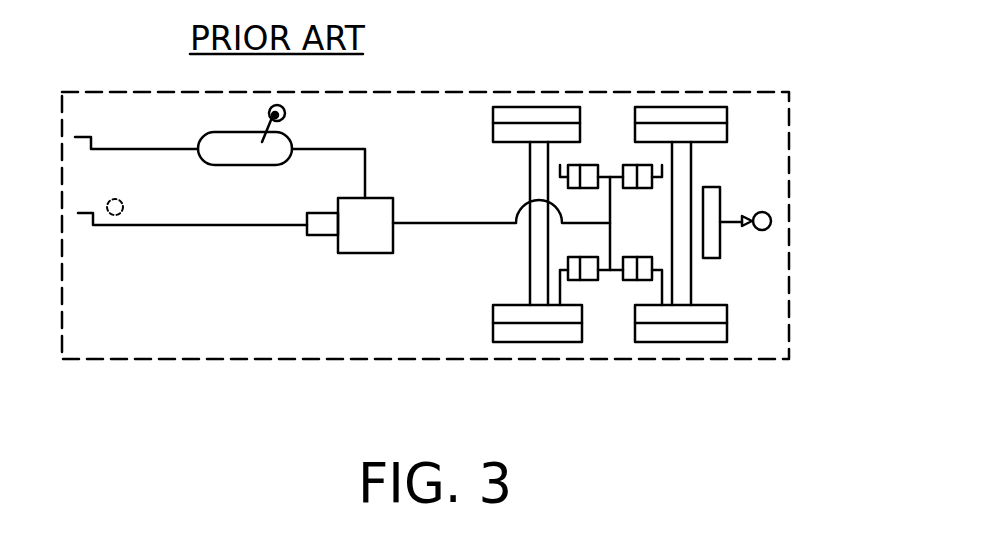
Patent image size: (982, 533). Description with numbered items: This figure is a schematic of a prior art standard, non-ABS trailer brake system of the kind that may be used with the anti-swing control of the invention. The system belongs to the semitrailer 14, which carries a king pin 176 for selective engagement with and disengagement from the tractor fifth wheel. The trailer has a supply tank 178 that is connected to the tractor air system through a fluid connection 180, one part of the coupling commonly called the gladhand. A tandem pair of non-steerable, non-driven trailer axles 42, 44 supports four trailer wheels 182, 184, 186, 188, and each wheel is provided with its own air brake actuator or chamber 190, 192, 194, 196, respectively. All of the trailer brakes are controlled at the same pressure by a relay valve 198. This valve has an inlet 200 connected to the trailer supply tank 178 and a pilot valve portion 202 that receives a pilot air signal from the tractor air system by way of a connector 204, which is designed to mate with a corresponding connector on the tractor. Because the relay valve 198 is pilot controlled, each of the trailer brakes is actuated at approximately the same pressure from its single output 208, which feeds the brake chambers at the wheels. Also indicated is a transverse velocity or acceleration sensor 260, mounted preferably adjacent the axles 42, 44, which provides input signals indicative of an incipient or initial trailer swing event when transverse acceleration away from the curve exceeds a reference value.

The semitrailer 14 is at (422, 377).
The trailer axle 42 is at (455, 290).
The trailer axle 44 is at (718, 166).
The king pin 176 is at (123, 200).
The supply tank 178 is at (278, 152).
The fluid connection 180 is at (91, 137).
The trailer wheel 182 is at (720, 117).
The trailer wheel 184 is at (715, 332).
The trailer wheel 186 is at (502, 116).
The trailer wheel 188 is at (505, 335).
The air brake actuator 190 is at (626, 165).
The air brake actuator 192 is at (627, 281).
The air brake actuator 194 is at (588, 165).
The air brake actuator 196 is at (588, 281).
The relay valve 198 is at (372, 210).
The inlet 200 is at (365, 160).
The pilot valve portion 202 is at (325, 237).
The connector 204 is at (93, 226).
The output 208 is at (416, 228).
The transverse velocity or acceleration sensor 260 is at (742, 260).